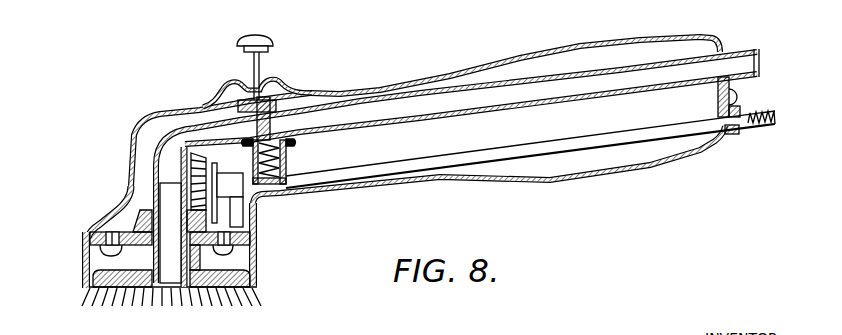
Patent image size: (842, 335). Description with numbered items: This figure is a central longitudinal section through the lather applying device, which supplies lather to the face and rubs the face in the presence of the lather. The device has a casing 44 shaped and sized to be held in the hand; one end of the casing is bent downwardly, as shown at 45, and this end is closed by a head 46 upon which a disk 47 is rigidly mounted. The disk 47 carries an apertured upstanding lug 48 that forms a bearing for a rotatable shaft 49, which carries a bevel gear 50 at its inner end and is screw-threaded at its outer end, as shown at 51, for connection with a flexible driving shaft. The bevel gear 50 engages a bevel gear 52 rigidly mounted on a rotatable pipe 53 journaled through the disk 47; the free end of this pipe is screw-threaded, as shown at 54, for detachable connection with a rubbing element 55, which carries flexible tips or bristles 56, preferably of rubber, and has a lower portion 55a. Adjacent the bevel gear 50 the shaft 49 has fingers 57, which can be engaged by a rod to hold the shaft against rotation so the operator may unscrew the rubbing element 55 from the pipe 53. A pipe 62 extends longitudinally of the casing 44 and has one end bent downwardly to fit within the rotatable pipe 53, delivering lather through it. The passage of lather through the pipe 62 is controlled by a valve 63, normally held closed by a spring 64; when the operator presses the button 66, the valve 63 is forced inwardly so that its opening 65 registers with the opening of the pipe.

The casing 44 is at (496, 149).
The downwardly bent end 45 is at (99, 205).
The head 46 is at (73, 262).
The disk 47 is at (87, 238).
The upstanding lug 48 is at (269, 209).
The rotatable shaft 49 is at (530, 166).
The bevel gear 50 is at (201, 137).
The screw-threaded outer end 51 is at (770, 134).
The bevel gear 52 is at (91, 213).
The rotatable pipe 53 is at (183, 241).
The screw-threaded free end 54 is at (171, 311).
The rubbing element 55 is at (87, 273).
The brush base block 55a is at (215, 278).
The flexible tips or bristles 56 is at (239, 283).
The fingers 57 is at (292, 244).
The pipe 62 is at (515, 49).
The valve 63 is at (457, 166).
The spring 64 is at (283, 184).
The opening 65 is at (240, 81).
The button 66 is at (273, 84).